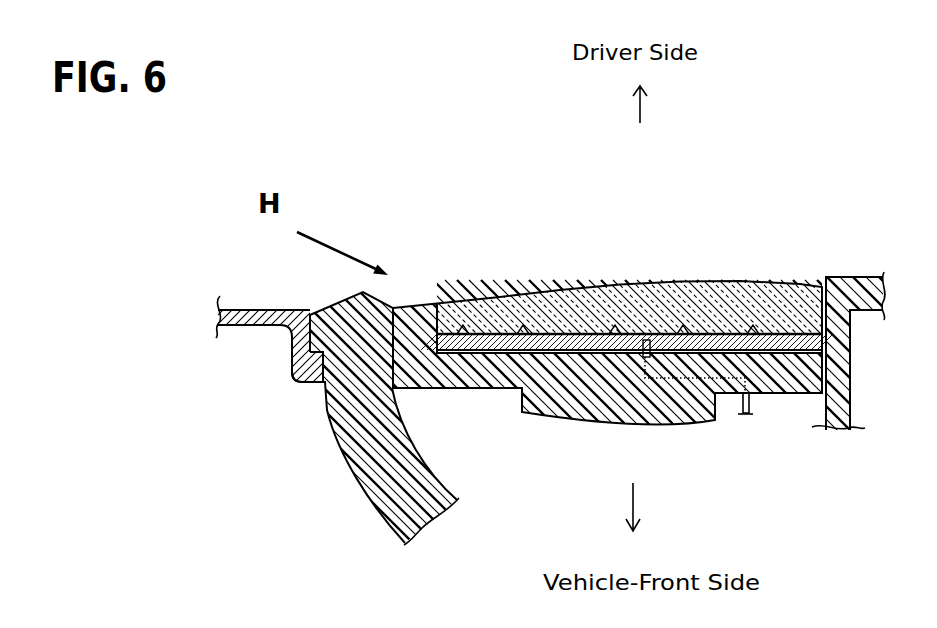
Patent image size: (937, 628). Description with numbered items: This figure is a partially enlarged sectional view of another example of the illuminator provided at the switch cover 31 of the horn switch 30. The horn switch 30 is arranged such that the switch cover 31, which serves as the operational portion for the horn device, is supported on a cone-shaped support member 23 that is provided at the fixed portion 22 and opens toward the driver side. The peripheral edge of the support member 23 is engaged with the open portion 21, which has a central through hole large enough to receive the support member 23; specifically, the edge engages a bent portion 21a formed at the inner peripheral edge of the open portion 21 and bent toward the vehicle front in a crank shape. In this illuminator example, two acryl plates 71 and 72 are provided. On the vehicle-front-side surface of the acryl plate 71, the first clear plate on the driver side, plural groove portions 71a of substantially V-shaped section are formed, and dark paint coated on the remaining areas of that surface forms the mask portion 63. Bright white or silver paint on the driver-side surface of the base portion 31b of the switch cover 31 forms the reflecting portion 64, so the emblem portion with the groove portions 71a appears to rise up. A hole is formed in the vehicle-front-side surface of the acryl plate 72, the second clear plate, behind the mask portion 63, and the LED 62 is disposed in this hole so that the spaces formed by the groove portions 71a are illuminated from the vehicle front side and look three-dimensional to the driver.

The open portion 21 is at (258, 327).
The bent portion 21a is at (309, 382).
The fixed portion 22 is at (829, 226).
The support member 23 is at (382, 484).
The horn switch 30 is at (577, 218).
The switch cover 31 is at (423, 297).
The base portion 31b is at (473, 389).
The LED 62 is at (677, 336).
The mask portion 63 is at (737, 336).
The reflecting portion 64 is at (492, 333).
The acryl plate 71 is at (657, 283).
The groove portions 71a is at (611, 325).
The acryl plate 72 is at (782, 357).